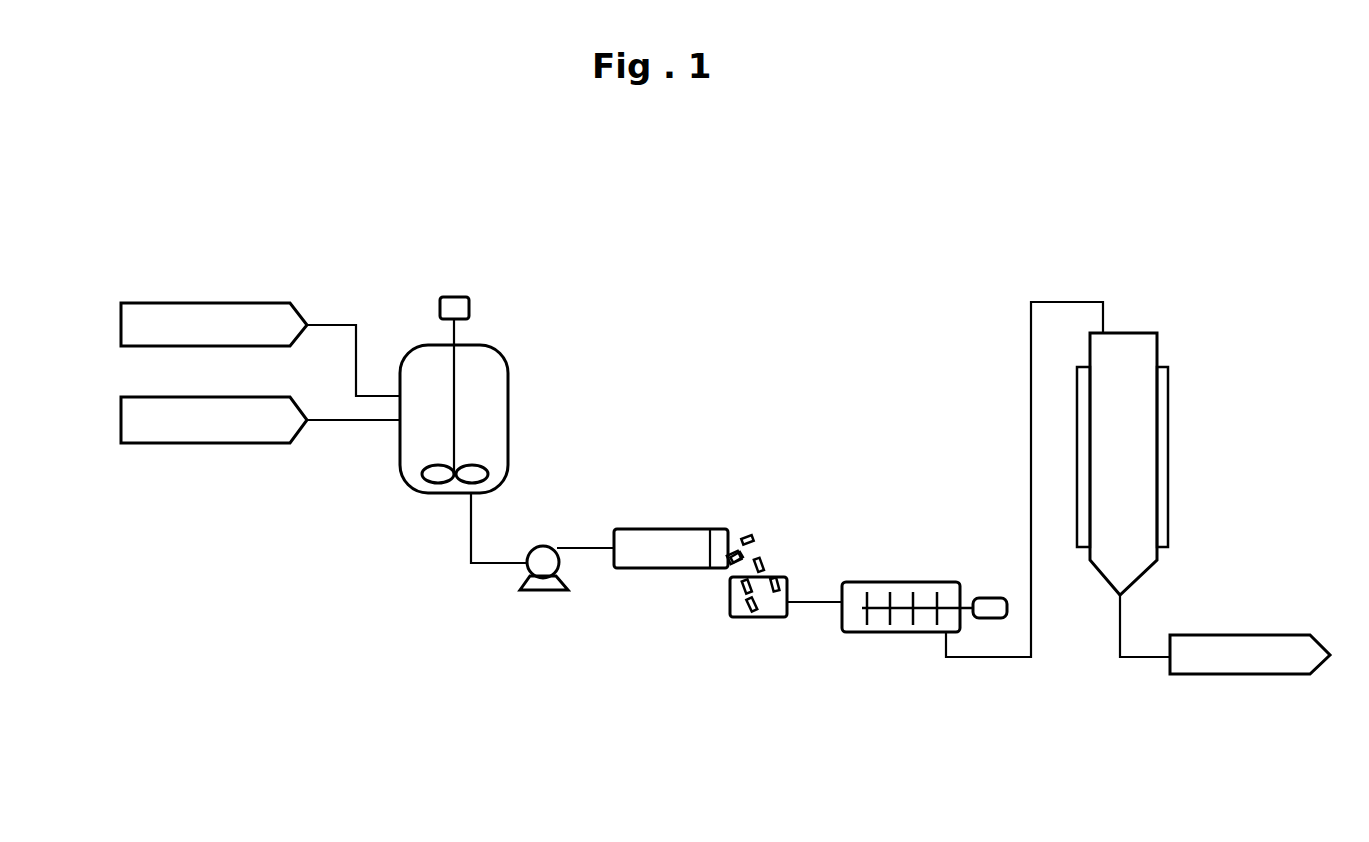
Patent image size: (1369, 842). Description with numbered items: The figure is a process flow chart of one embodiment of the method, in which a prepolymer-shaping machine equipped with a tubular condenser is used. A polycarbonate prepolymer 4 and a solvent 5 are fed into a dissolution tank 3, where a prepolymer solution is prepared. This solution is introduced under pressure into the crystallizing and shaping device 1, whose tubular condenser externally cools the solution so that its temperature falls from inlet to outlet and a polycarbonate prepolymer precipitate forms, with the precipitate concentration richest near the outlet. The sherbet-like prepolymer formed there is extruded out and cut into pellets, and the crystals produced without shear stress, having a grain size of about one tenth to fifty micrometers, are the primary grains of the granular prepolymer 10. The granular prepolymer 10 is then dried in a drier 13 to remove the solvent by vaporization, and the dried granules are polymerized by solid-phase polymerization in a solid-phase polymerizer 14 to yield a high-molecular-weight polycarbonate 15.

The crystallizing and shaping device 1 is at (665, 528).
The dissolution tank 3 is at (508, 365).
The polycarbonate prepolymer 4 is at (203, 322).
The solvent 5 is at (195, 422).
The granular prepolymer 10 is at (742, 588).
The drier 13 is at (903, 582).
The solid-phase polymerizer 14 is at (1157, 343).
The polycarbonate 15 is at (1222, 657).